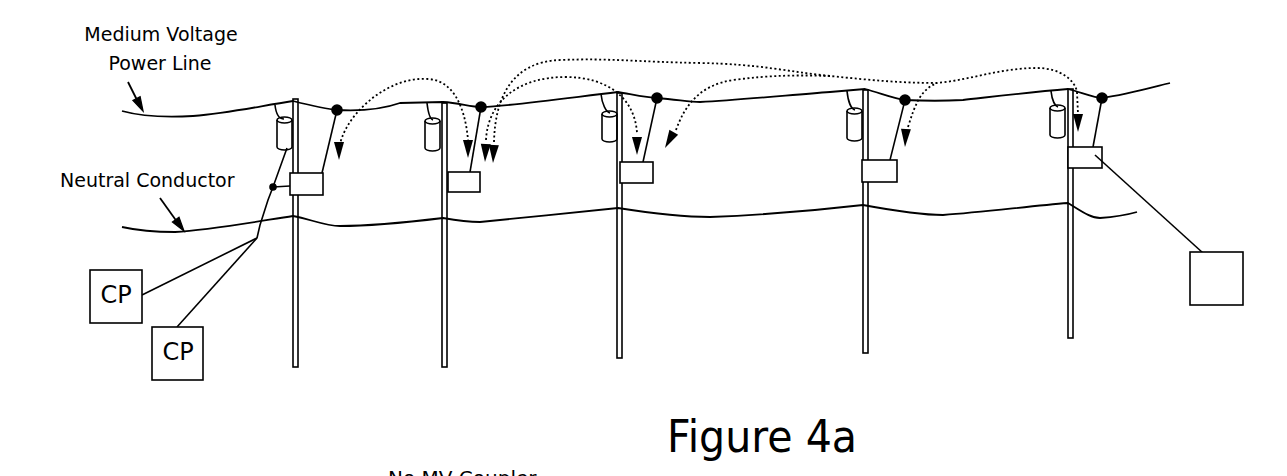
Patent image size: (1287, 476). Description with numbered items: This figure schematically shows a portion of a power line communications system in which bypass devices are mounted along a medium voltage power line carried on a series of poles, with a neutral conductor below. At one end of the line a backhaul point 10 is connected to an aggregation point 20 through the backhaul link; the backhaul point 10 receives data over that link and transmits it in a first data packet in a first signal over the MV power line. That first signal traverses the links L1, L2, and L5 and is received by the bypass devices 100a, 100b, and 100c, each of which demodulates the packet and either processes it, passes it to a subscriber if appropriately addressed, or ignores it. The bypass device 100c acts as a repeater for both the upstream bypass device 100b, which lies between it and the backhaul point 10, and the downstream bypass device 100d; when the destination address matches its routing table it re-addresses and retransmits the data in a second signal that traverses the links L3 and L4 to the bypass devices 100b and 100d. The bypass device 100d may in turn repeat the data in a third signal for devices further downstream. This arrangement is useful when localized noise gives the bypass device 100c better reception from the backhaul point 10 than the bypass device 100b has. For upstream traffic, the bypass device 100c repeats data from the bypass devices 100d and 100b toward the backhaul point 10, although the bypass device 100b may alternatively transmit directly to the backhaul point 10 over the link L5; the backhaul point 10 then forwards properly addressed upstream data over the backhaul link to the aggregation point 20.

The backhaul point 10 is at (1100, 147).
The aggregation point 20 is at (1169, 230).
The bypass device 100a is at (898, 173).
The bypass device 100b is at (653, 173).
The bypass device 100c is at (482, 178).
The bypass device 100d is at (330, 182).
The link L1 is at (931, 110).
The link L2 is at (786, 92).
The link L3 is at (561, 109).
The link L4 is at (403, 106).
The link L5 is at (753, 105).